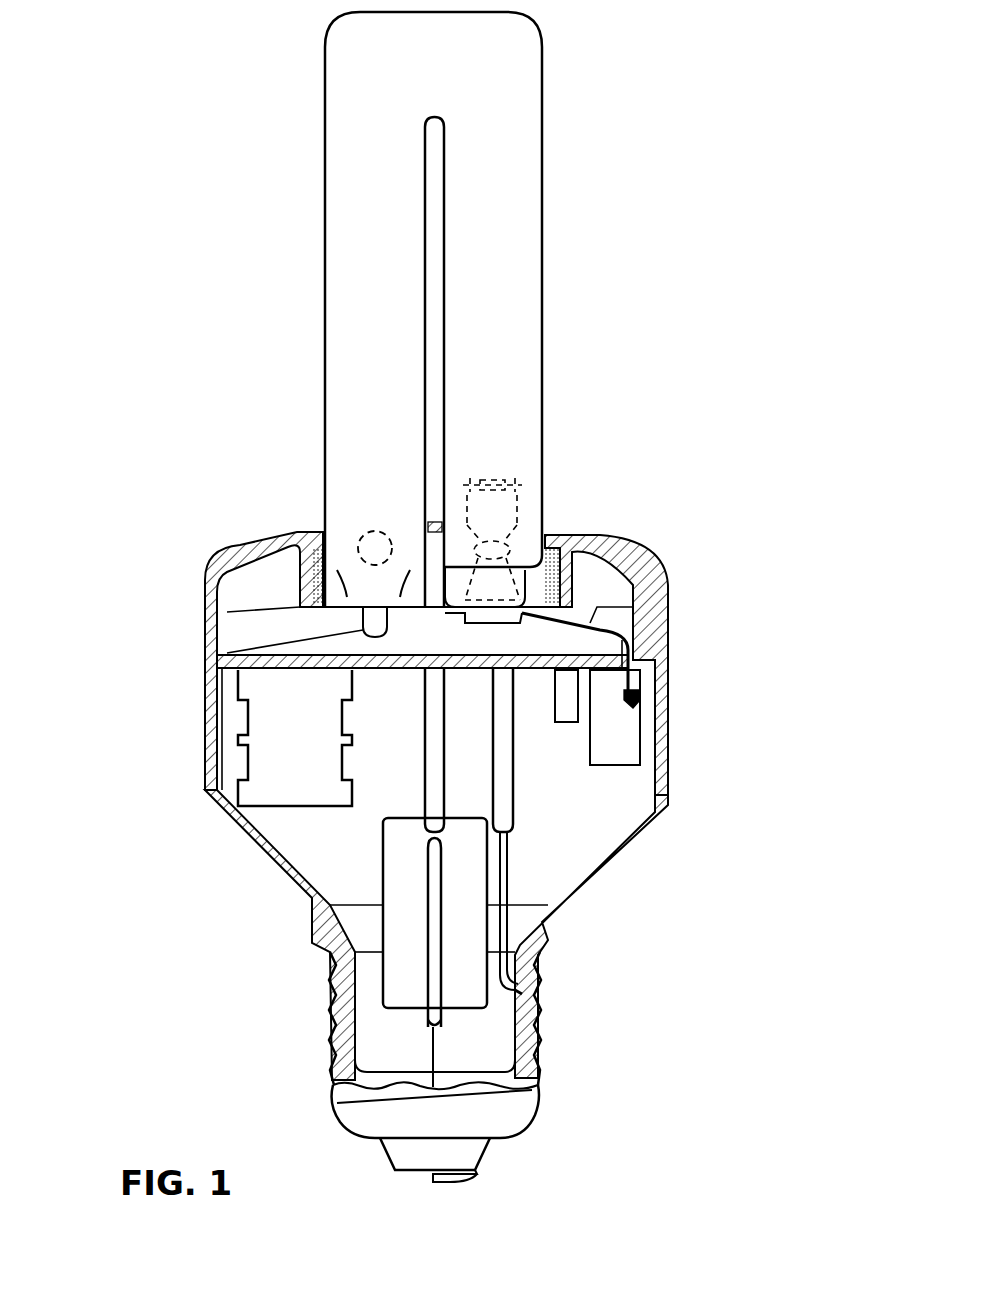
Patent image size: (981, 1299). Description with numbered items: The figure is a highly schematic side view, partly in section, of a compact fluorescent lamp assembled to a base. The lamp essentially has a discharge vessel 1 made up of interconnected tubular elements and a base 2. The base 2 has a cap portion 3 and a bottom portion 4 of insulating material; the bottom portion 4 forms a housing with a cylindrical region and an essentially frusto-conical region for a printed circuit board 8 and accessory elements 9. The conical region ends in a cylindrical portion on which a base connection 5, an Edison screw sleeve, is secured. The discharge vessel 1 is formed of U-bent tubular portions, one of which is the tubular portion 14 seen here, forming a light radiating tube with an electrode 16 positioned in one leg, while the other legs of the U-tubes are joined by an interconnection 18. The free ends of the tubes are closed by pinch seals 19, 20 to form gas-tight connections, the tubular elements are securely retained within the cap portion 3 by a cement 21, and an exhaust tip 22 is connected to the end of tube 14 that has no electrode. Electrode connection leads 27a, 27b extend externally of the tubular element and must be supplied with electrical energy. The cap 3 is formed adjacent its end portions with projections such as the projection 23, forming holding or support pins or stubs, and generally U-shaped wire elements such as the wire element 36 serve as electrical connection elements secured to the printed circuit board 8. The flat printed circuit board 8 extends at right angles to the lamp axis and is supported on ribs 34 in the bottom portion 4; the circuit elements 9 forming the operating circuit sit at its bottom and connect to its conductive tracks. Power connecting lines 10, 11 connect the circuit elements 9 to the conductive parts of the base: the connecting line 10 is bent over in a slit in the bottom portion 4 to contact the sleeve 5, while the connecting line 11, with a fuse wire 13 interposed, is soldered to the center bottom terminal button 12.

The discharge vessel 1 is at (300, 183).
The base 2 is at (700, 839).
The cap portion 3 is at (205, 578).
The bottom portion 4 is at (205, 790).
The base connection 5 is at (328, 1020).
The printed circuit board 8 is at (297, 664).
The accessory elements 9 is at (568, 715).
The power connecting line 10 is at (522, 993).
The power connecting line 11 is at (437, 1047).
The center bottom terminal button 12 is at (450, 1182).
The fuse wire 13 is at (435, 923).
The U-bent tubular portion 14 is at (545, 183).
The electrode 16 is at (497, 478).
The interconnection 18 is at (365, 535).
The pinch seal 19 is at (572, 590).
The pinch seal 20 is at (362, 614).
The cement 21 is at (575, 568).
The exhaust tip 22 is at (227, 653).
The projection 23 is at (655, 670).
The electrode connection lead 27a is at (655, 613).
The electrode connection lead 27b is at (495, 627).
The ribs 34 is at (212, 750).
The U-shaped wire element 36 is at (580, 648).